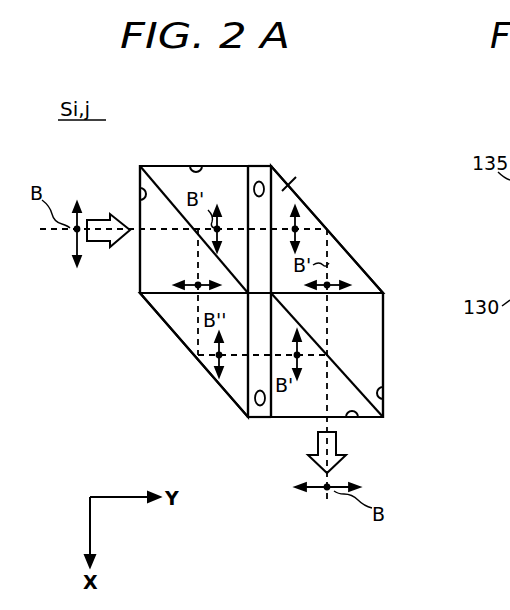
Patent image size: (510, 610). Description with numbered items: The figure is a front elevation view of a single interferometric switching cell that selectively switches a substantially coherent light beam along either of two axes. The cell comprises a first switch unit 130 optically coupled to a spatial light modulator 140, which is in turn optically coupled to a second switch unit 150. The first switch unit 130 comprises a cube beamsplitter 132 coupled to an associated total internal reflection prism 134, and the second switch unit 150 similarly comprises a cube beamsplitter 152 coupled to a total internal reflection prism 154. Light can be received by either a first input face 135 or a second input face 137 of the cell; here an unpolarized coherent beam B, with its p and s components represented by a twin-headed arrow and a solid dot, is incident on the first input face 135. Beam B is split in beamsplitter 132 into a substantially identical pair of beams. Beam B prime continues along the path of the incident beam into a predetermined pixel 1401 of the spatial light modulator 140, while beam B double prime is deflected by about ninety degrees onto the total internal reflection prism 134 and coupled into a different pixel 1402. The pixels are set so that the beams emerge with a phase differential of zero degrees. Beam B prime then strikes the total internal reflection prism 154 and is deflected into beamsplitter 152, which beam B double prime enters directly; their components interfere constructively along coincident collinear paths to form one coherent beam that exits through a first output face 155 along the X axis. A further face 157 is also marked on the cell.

The first switch unit 130 is at (132, 296).
The cube beamsplitter 132 is at (164, 178).
The total internal reflection (TIR) prism 134 is at (206, 368).
The first input face 135 is at (143, 188).
The second input face 137 is at (202, 166).
The spatial light modulator (SLM) 140 is at (262, 432).
The predetermined pixel 1401 is at (257, 164).
The predetermined pixel 1402 is at (254, 420).
The second switch unit 150 is at (373, 248).
The cube beamsplitter 152 is at (373, 371).
The total internal reflection (TIR) prism 154 is at (285, 180).
The first output face 155 is at (354, 424).
The right edge contact 157 is at (390, 403).